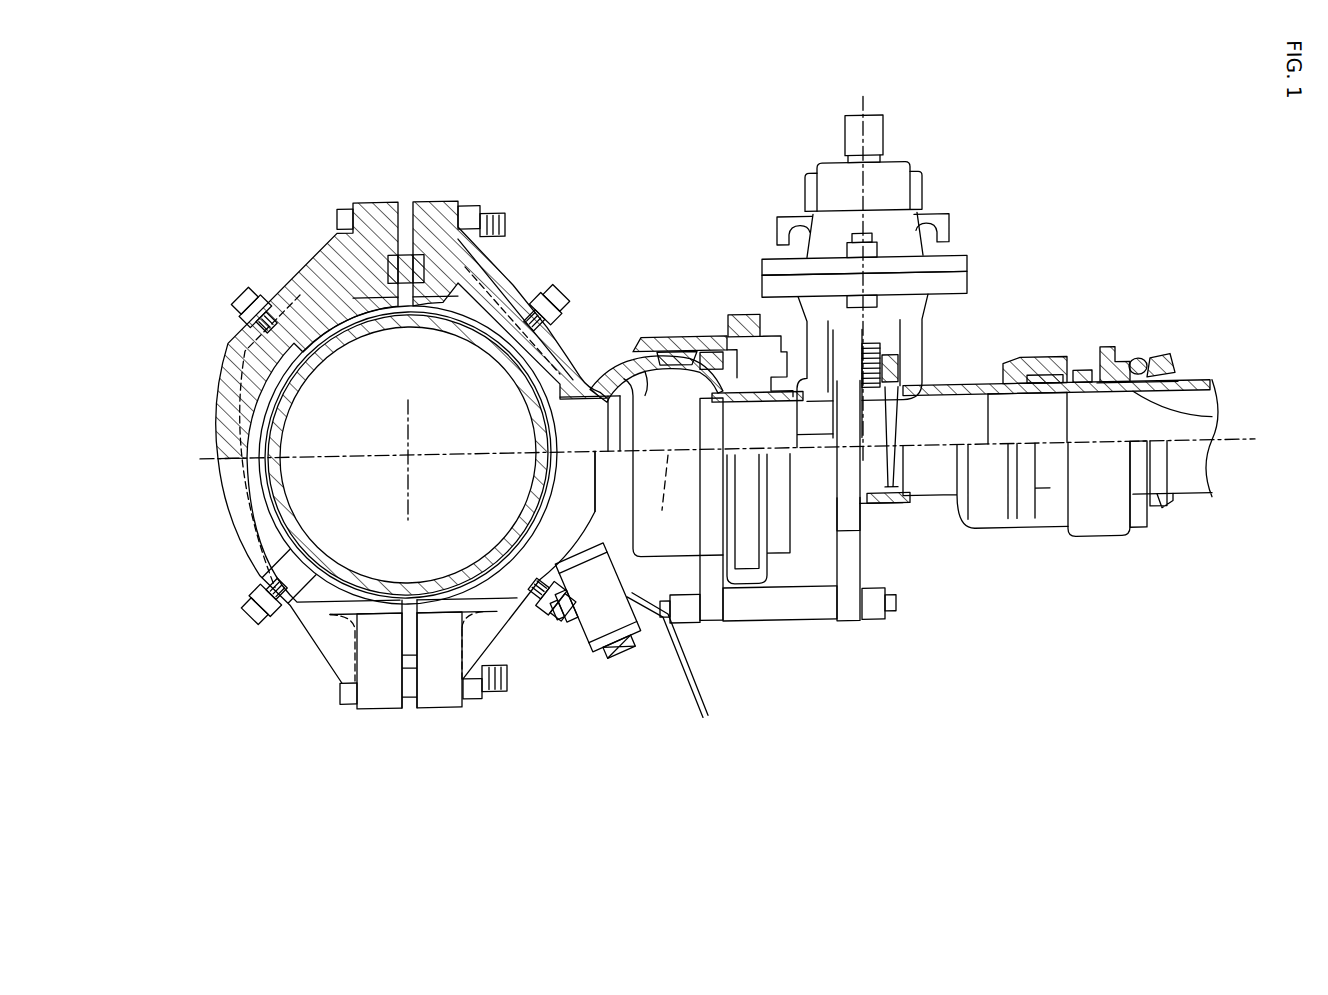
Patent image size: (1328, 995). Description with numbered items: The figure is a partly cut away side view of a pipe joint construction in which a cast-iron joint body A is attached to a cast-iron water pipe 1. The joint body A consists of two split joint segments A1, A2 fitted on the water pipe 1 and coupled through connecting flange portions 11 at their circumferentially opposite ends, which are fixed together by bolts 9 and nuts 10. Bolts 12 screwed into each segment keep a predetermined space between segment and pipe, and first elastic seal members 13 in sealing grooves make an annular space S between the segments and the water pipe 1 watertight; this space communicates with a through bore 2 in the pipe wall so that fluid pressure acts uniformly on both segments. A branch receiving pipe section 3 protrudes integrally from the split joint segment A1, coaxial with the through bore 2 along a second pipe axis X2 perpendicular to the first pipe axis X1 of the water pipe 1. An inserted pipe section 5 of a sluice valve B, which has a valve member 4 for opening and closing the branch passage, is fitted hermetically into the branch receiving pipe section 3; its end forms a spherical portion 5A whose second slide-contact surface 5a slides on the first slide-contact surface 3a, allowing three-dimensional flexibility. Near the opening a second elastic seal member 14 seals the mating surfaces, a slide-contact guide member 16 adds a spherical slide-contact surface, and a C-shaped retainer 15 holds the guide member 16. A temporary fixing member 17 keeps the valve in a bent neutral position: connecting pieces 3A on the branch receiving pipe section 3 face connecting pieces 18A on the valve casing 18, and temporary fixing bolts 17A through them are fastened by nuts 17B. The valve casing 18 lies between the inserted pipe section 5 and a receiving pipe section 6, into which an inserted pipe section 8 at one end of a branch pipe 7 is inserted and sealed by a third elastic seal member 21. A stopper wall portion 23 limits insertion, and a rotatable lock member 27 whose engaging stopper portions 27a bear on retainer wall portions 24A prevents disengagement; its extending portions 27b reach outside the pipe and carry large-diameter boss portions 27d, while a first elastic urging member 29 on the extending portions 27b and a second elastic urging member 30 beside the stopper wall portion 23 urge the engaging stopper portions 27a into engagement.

The water pipe 1 is at (314, 392).
The through bore 2 is at (545, 470).
The branch receiving pipe section 3 is at (655, 341).
The first slide-contact surface 3a is at (606, 421).
The connecting pieces 3A is at (712, 628).
The valve member 4 is at (903, 443).
The inserted pipe section 5 is at (745, 400).
The second slide-contact surface 5a is at (622, 374).
The spherical portion 5A is at (672, 400).
The receiving pipe section 6 is at (1086, 550).
The branch pipe 7 is at (1202, 392).
The inserted pipe section 8 is at (1005, 398).
The bolts 9 is at (347, 208).
The nuts 10 is at (471, 210).
The connecting flange portions 11 is at (436, 248).
The bolts 12 is at (247, 300).
The first elastic seal members 13 is at (346, 282).
The second elastic seal member 14 is at (678, 357).
The retainer 15 is at (745, 321).
The slide-contact guide member 16 is at (710, 358).
The temporary fixing member 17 is at (786, 630).
The temporary fixing bolts 17A is at (766, 628).
The nuts 17B is at (882, 628).
The valve casing 18 is at (910, 514).
The connecting pieces 18A is at (848, 630).
The third elastic seal member 21 is at (1043, 375).
The stopper wall portion 23 is at (1040, 397).
The retainer wall portions 24A is at (1125, 359).
The lock member 27 is at (1214, 434).
The engaging stopper portions 27a is at (1107, 361).
The extending portions 27b is at (1171, 370).
The large-diameter boss portions 27d is at (1165, 523).
The first elastic urging member 29 is at (1138, 372).
The second elastic urging member 30 is at (1085, 397).
The joint body A is at (226, 254).
The split joint segment A1 is at (521, 292).
The split joint segment A2 is at (312, 282).
The sluice valve B is at (803, 198).
The annular space S is at (243, 375).
The first pipe axis X1 is at (430, 424).
The second pipe axis X2 is at (659, 494).